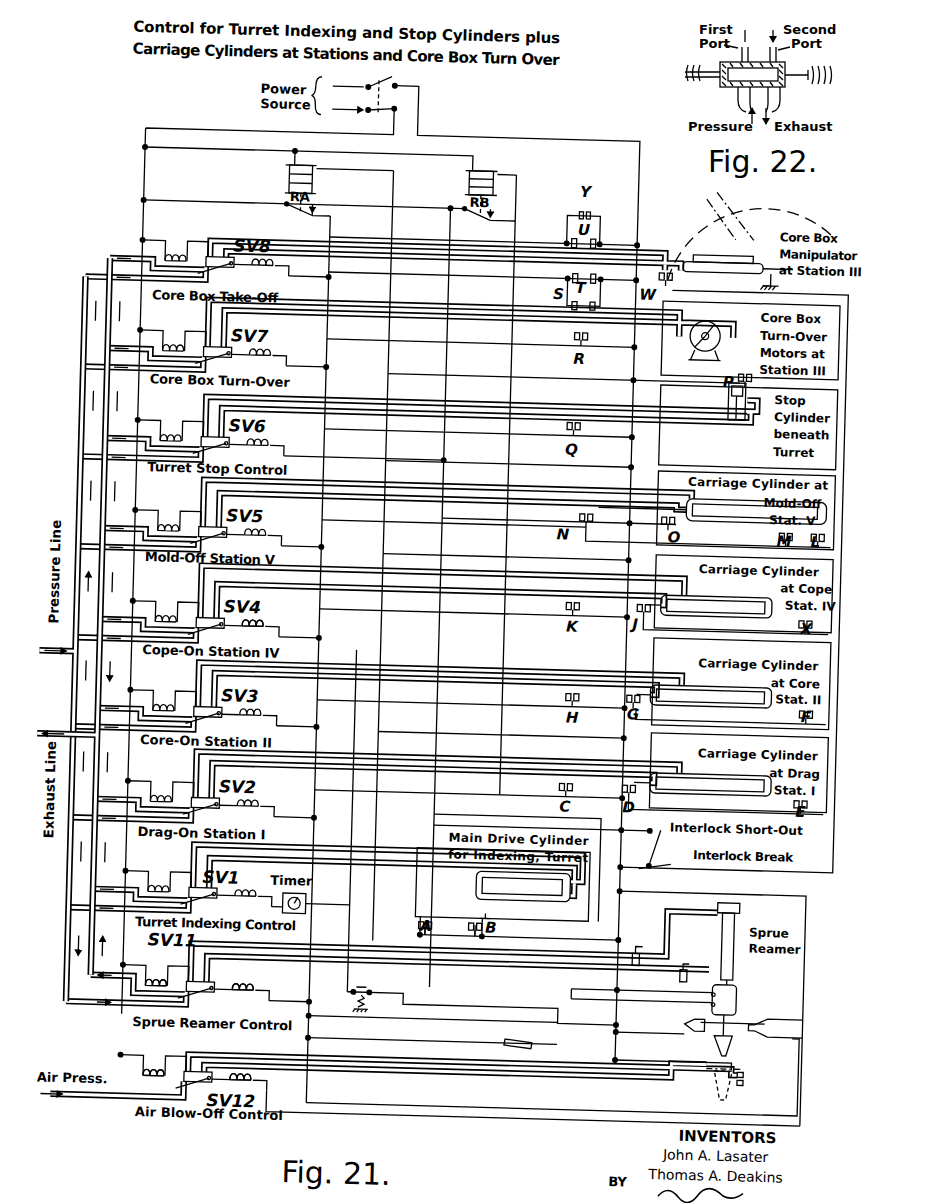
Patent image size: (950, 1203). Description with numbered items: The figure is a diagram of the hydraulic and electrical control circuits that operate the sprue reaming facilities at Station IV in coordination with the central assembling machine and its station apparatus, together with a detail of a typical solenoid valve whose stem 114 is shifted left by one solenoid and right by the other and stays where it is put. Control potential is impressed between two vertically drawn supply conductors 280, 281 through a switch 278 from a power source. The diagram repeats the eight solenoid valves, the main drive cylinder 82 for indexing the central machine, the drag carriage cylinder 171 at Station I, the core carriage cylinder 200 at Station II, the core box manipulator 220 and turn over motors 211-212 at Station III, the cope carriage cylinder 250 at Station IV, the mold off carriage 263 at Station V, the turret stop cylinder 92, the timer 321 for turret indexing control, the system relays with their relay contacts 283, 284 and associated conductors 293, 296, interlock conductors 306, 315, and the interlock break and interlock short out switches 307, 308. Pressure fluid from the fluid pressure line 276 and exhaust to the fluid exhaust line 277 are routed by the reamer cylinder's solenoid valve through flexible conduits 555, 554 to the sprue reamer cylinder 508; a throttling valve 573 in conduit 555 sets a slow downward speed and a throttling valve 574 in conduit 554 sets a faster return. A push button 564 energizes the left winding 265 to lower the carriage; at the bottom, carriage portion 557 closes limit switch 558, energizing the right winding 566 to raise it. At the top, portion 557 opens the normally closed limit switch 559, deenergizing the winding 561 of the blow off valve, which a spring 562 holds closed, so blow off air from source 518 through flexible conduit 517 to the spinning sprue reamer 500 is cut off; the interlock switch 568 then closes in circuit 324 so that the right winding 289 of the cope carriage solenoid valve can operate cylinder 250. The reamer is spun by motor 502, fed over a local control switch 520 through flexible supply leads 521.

In FIG. 22, the valve stem 114 is at (760, 62).
In FIG. 21, the fluid pressure line 276 is at (80, 651).
In FIG. 22, the fluid pressure line 276 is at (742, 104).
In FIG. 21, the fluid exhaust line 277 is at (75, 732).
In FIG. 22, the fluid exhaust line 277 is at (786, 104).
In FIG. 21, the switch 278 is at (386, 99).
In FIG. 21, the supply conductor 280 is at (147, 215).
In FIG. 21, the supply conductor 281 is at (645, 186).
In FIG. 21, the relay contact 283 is at (290, 204).
In FIG. 21, the relay contact 284 is at (468, 204).
In FIG. 21, the core box manipulator 220 is at (708, 243).
In FIG. 21, the interlock conductor 306 is at (853, 284).
In FIG. 21, the turn over motors 211-212 is at (702, 330).
In FIG. 21, the turret stop cylinder 92 is at (746, 401).
In FIG. 21, the mold off carriage 263 is at (712, 513).
In FIG. 21, the conductor 293 is at (338, 515).
In FIG. 21, the conductor 296 is at (458, 518).
In FIG. 21, the right winding of solenoid valve SV4 289 is at (283, 618).
In FIG. 21, the circuit 324 is at (374, 642).
In FIG. 21, the cope carriage cylinder 250 is at (708, 616).
In FIG. 21, the core carriage cylinder 200 is at (704, 705).
In FIG. 21, the drag carriage cylinder 171 is at (702, 794).
In FIG. 21, the interlock short out switch 308 is at (668, 849).
In FIG. 21, the interlock break switch 307 is at (685, 850).
In FIG. 21, the interlock conductor 315 is at (441, 838).
In FIG. 21, the main drive cylinder 82 is at (523, 886).
In FIG. 21, the timer 321 is at (332, 892).
In FIG. 21, the flexible conduit 555 is at (406, 936).
In FIG. 21, the flexible conduit 554 is at (452, 955).
In FIG. 21, the throttling valve 573 is at (655, 938).
In FIG. 21, the throttling valve 574 is at (707, 962).
In FIG. 21, the sprue reamer cylinder 508 is at (745, 933).
In FIG. 21, the motor 502 is at (765, 979).
In FIG. 21, the interlock switch 568 is at (712, 1006).
In FIG. 21, the limit switch 559 is at (784, 1008).
In FIG. 21, the sprue reamer 500 is at (762, 1024).
In FIG. 21, the carriage portion 557 is at (711, 1084).
In FIG. 21, the limit switch 558 is at (774, 1062).
In FIG. 21, the local control switch 520 is at (540, 1027).
In FIG. 21, the flexible supply leads 521 is at (591, 989).
In FIG. 21, the flexible conduit 517 is at (496, 1092).
In FIG. 21, the air source 518 is at (118, 1098).
In FIG. 21, the winding 561 is at (170, 1075).
In FIG. 21, the spring 562 is at (280, 1072).
In FIG. 21, the right winding of solenoid valve SV11 566 is at (280, 983).
In FIG. 21, the push button 564 is at (396, 986).
In FIG. 21, the left winding of solenoid valve SV11 265 is at (183, 975).